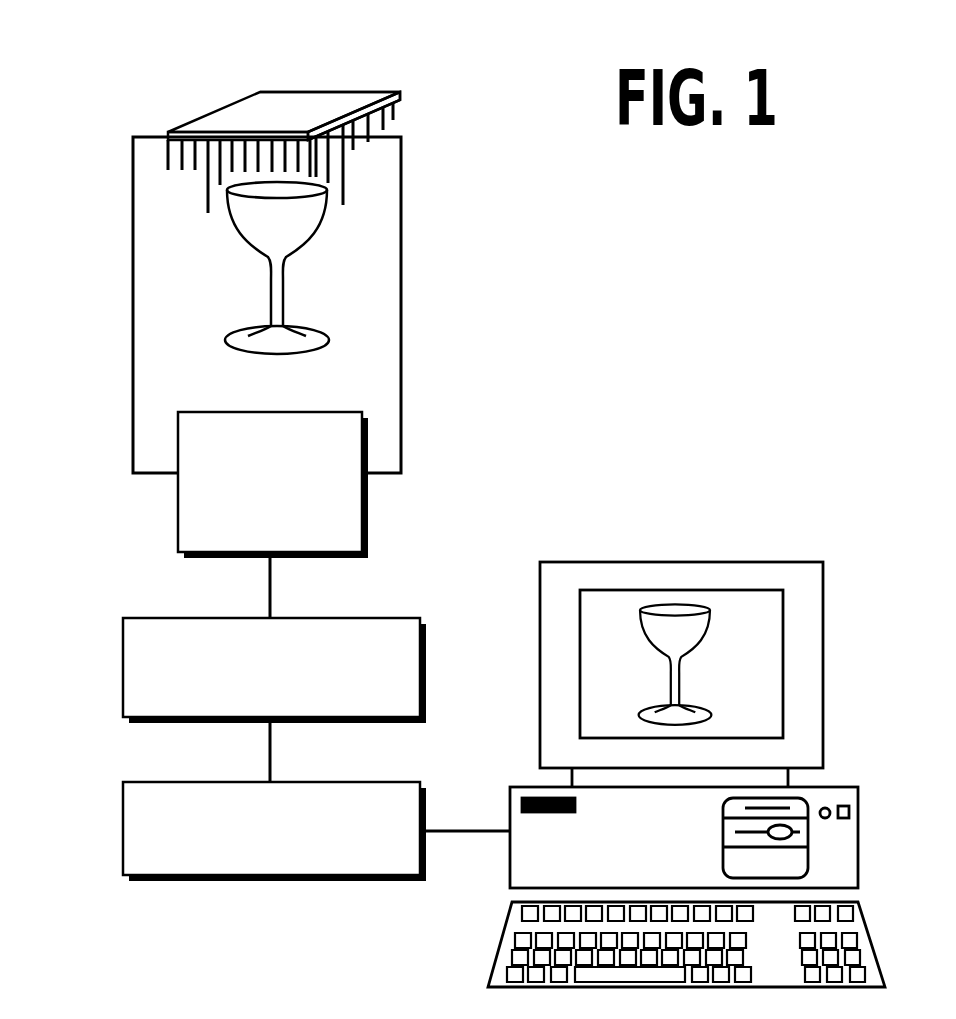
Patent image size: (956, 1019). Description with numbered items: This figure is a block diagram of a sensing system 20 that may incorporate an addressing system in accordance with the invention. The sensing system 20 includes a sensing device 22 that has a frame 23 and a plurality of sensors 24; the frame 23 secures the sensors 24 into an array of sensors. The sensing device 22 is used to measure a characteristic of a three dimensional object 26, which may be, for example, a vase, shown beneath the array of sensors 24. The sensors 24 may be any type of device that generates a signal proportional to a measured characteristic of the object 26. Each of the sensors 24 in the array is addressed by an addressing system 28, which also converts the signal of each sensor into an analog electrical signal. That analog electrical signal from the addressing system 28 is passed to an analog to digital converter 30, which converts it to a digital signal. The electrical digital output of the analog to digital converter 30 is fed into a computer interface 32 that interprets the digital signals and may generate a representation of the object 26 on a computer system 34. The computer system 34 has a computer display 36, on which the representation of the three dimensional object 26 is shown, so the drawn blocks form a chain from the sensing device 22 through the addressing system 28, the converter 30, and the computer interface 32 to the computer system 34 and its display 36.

The sensing system 20 is at (106, 167).
The sensing device 22 is at (297, 80).
The frame 23 is at (400, 95).
The sensors 24 is at (395, 122).
The three dimensional object 26 is at (283, 288).
The addressing system 28 is at (252, 536).
The analog to digital converter 30 is at (252, 704).
The computer interface 32 is at (252, 863).
The computer system 34 is at (672, 536).
The computer display 36 is at (823, 665).